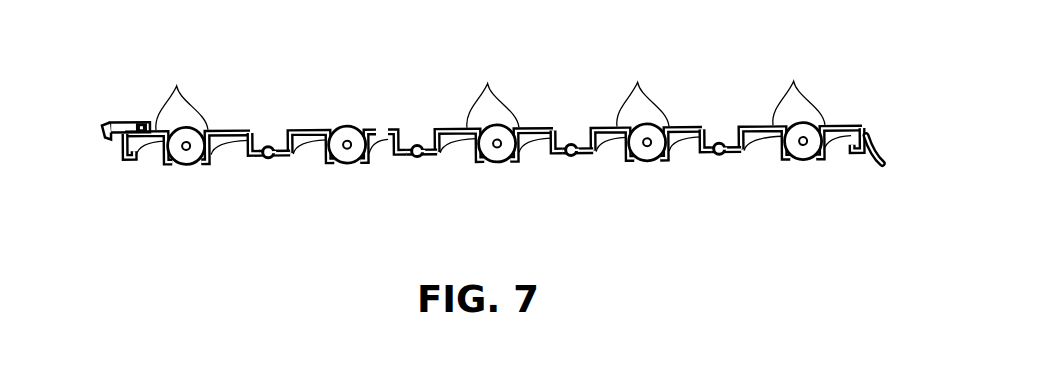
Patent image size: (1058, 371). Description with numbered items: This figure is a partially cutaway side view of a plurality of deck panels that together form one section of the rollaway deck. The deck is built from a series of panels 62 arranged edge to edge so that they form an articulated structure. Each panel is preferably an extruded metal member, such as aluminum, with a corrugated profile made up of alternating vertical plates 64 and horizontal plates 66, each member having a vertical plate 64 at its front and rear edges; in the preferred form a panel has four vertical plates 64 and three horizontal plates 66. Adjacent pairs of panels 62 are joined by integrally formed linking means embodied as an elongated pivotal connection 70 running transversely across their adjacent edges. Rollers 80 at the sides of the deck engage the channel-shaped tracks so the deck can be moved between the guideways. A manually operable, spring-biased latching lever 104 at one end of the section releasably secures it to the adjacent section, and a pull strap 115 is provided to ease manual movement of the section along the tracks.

The panel 62 is at (289, 124).
The vertical plate 64 is at (143, 157).
The horizontal plate 66 is at (178, 86).
The pivotal connection 70 is at (268, 163).
The roller 80 is at (190, 160).
The latching lever 104 is at (114, 122).
The pull strap 115 is at (886, 168).